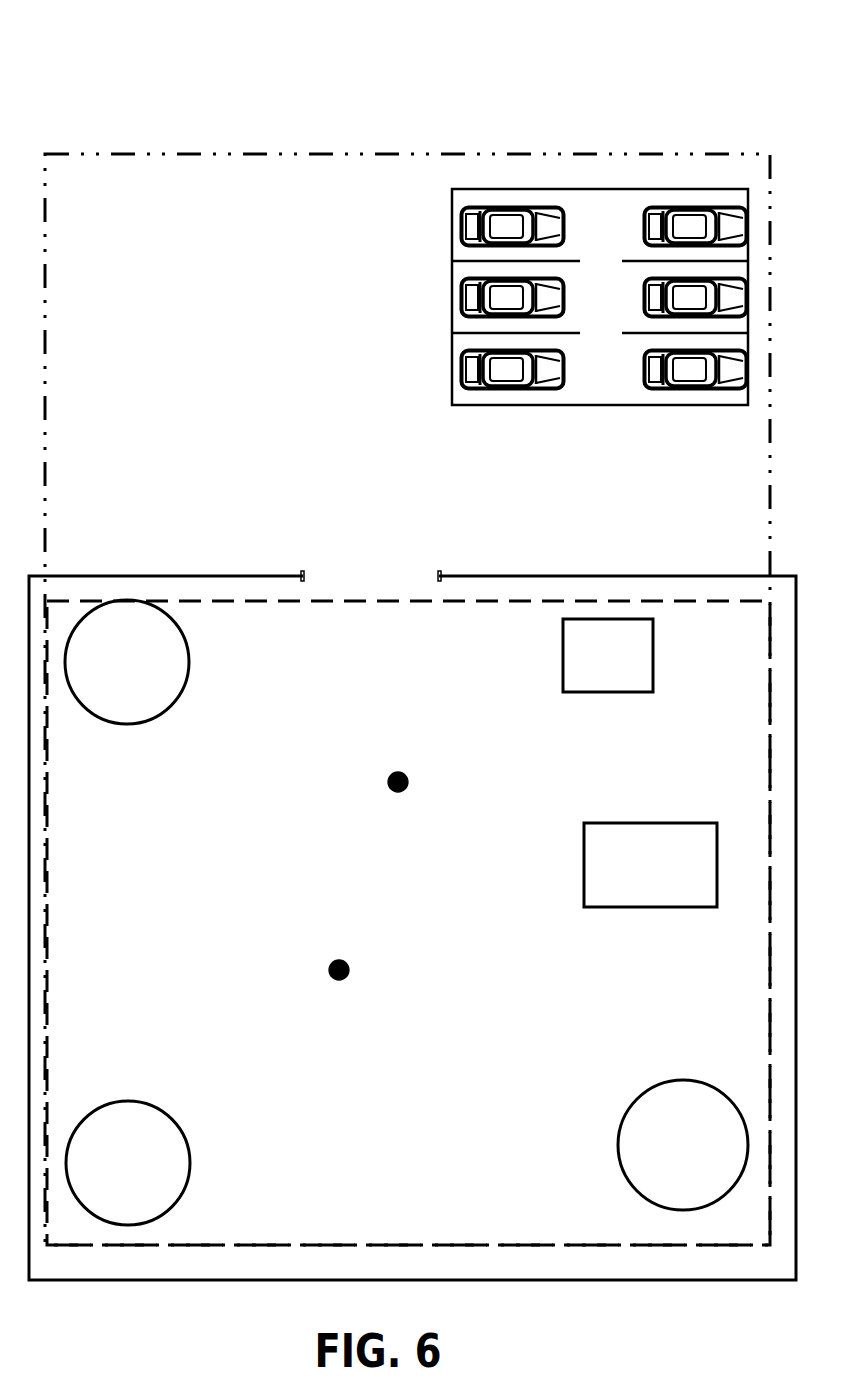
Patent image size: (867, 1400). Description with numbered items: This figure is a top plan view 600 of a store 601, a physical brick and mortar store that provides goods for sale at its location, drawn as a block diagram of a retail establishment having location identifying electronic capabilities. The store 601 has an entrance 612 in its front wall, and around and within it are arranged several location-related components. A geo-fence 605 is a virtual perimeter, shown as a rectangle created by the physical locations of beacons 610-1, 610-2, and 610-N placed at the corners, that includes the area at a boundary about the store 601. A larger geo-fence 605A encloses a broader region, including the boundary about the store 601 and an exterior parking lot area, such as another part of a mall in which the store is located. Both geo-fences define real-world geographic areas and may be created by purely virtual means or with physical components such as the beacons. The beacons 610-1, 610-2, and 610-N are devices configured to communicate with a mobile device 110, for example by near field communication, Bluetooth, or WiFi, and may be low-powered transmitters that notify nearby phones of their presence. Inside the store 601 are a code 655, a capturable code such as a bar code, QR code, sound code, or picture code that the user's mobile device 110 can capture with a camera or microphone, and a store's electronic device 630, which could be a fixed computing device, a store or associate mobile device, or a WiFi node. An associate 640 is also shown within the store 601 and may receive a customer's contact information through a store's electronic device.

The top plan view 600 is at (412, 640).
The geo-fence 605A is at (297, 155).
The geo-fence 605 is at (233, 600).
The code 655 is at (582, 216).
The store 601 is at (598, 572).
The entrance 612 is at (357, 573).
The beacon 610-1 is at (158, 686).
The beacon 610-2 is at (159, 1187).
The beacon 610-N is at (650, 1168).
The mobile device 110 is at (390, 773).
The store's electronic device 630 is at (631, 887).
The associate 640 is at (332, 965).